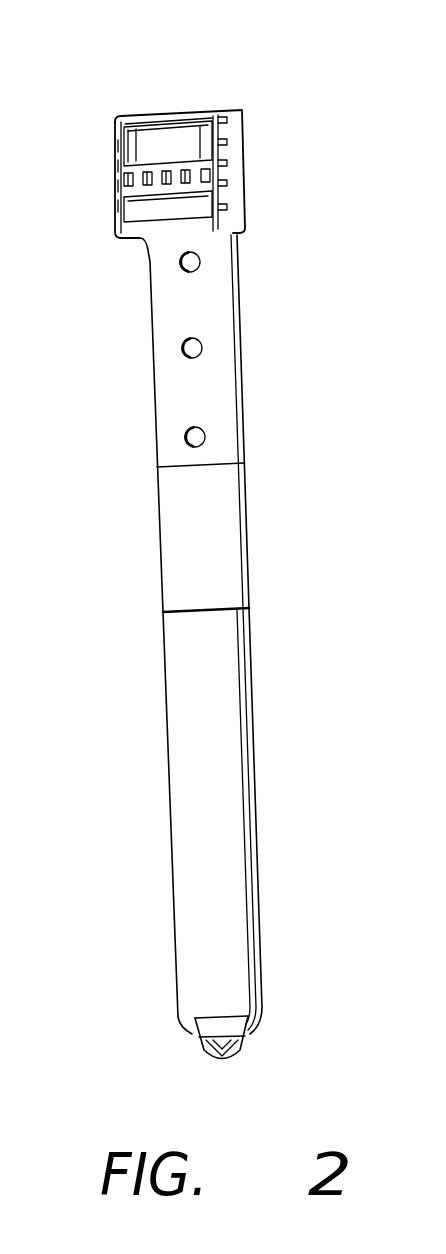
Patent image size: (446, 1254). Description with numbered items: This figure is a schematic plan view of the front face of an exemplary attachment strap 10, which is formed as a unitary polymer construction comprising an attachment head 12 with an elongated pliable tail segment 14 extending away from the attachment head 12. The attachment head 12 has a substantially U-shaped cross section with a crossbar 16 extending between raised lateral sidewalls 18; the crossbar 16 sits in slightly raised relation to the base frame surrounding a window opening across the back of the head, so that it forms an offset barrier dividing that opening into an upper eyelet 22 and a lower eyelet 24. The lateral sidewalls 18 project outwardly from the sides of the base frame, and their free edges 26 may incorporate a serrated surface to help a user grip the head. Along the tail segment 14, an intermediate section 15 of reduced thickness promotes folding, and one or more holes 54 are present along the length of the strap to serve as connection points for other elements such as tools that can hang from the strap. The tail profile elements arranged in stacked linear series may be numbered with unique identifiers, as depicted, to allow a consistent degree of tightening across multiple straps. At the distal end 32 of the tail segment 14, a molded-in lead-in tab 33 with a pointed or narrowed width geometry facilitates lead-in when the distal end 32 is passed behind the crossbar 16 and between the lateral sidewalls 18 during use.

The attachment strap 10 is at (225, 550).
The attachment head 12 is at (188, 158).
The tail segment 14 is at (230, 652).
The intermediate section 15 is at (225, 415).
The crossbar 16 is at (152, 200).
The lateral sidewalls 18 is at (142, 152).
The upper eyelet 22 is at (173, 152).
The lower eyelet 24 is at (180, 203).
The free edges 26 is at (118, 153).
The distal end 32 is at (240, 997).
The lead-in tab 33 is at (238, 1058).
The holes 54 is at (200, 263).